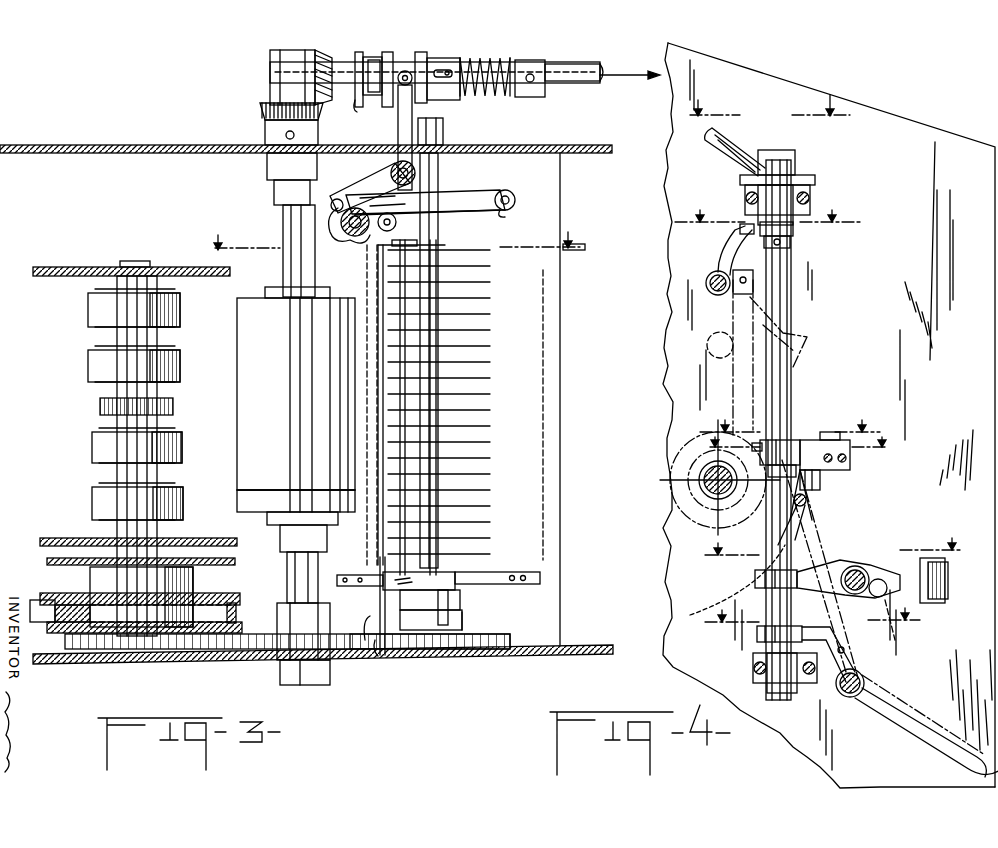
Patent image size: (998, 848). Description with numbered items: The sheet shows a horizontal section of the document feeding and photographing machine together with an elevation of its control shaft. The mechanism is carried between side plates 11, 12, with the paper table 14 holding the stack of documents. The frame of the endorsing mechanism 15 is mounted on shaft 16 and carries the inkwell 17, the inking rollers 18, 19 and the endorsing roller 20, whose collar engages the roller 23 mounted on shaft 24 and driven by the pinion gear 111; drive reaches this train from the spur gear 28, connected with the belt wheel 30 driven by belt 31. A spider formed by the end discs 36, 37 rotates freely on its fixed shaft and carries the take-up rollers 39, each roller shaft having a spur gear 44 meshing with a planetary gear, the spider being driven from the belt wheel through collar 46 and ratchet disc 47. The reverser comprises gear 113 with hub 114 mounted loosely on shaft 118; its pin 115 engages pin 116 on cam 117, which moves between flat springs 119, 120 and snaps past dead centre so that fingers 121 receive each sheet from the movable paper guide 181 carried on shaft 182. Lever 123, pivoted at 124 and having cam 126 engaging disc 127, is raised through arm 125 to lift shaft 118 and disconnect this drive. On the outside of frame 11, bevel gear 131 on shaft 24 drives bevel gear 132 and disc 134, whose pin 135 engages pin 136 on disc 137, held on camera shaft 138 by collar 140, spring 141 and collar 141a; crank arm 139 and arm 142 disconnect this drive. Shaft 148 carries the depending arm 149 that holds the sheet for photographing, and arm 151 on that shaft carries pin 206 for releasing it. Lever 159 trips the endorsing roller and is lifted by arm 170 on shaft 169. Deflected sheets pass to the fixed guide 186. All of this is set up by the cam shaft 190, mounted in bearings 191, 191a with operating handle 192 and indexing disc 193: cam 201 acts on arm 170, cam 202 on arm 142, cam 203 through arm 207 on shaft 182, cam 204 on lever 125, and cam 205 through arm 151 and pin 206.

In FIG. 3, the side plate 11 is at (58, 145).
In FIG. 3, the side plate 12 is at (578, 655).
In FIG. 3, the paper table 14 is at (396, 234).
In FIG. 4, the frame of the endorsing mechanism 15 is at (771, 112).
In FIG. 4, the shaft 16 is at (768, 219).
In FIG. 4, the inkwell 17 is at (794, 425).
In FIG. 4, the inking roller 18 is at (800, 446).
In FIG. 4, the inking roller 19 is at (835, 548).
In FIG. 4, the endorsing roller 20 is at (823, 623).
In FIG. 3, the roller 23 is at (237, 322).
In FIG. 3, the shaft 24 is at (283, 265).
In FIG. 4, the shaft 24 is at (718, 496).
In FIG. 3, the spur gear 28 is at (65, 644).
In FIG. 3, the belt wheel 30 is at (80, 593).
In FIG. 3, the belt 31 is at (236, 609).
In FIG. 3, the disc 36 is at (75, 267).
In FIG. 3, the disc 37 is at (75, 538).
In FIG. 3, the take-up rollers 39 is at (88, 367).
In FIG. 3, the spur gear 44 is at (100, 408).
In FIG. 3, the collar 46 is at (185, 578).
In FIG. 3, the ratchet disc 47 is at (233, 565).
In FIG. 3, the pinion gear 111 is at (362, 640).
In FIG. 3, the gear 113 is at (510, 638).
In FIG. 3, the hub 114 is at (462, 625).
In FIG. 3, the pin 115 is at (408, 620).
In FIG. 3, the pin 116 is at (415, 598).
In FIG. 3, the cam 117 is at (395, 593).
In FIG. 3, the shaft 118 is at (400, 231).
In FIG. 4, the shaft 118 is at (856, 566).
In FIG. 3, the flat spring 119 is at (364, 572).
In FIG. 3, the flat spring 120 is at (505, 584).
In FIG. 3, the fingers 121 is at (490, 282).
In FIG. 3, the lever 123 is at (505, 207).
In FIG. 4, the lever 123 is at (898, 572).
In FIG. 3, the pivot 124 is at (514, 196).
In FIG. 4, the pivot 124 is at (945, 588).
In FIG. 4, the arm 125 is at (820, 588).
In FIG. 3, the cam 126 is at (440, 212).
In FIG. 3, the disc 127 is at (448, 190).
In FIG. 3, the bevel gear 131 is at (255, 112).
In FIG. 3, the bevel gear 132 is at (305, 50).
In FIG. 3, the disc 134 is at (362, 104).
In FIG. 3, the pin 135 is at (364, 52).
In FIG. 3, the pin 136 is at (375, 60).
In FIG. 3, the disc 137 is at (386, 107).
In FIG. 3, the shaft 138 is at (555, 90).
In FIG. 3, the crank arm 139 is at (438, 120).
In FIG. 3, the collar 140 is at (448, 58).
In FIG. 3, the spring 141 is at (507, 58).
In FIG. 3, the collar 141a is at (525, 60).
In FIG. 3, the arm 142 is at (365, 190).
In FIG. 4, the arm 142 is at (815, 438).
In FIG. 4, the shaft 148 is at (864, 681).
In FIG. 4, the depending arm 149 is at (930, 742).
In FIG. 4, the arm 151 is at (835, 675).
In FIG. 4, the lever 159 is at (742, 345).
In FIG. 4, the shaft 169 is at (716, 295).
In FIG. 4, the arm 170 is at (732, 250).
In FIG. 3, the movable paper guide 181 is at (367, 541).
In FIG. 4, the movable paper guide 181 is at (808, 508).
In FIG. 3, the shaft 182 is at (372, 660).
In FIG. 4, the shaft 182 is at (806, 500).
In FIG. 4, the fixed guide 186 is at (718, 604).
In FIG. 3, the cam shaft 190 is at (352, 238).
In FIG. 4, the cam shaft 190 is at (790, 258).
In FIG. 4, the bearing 191 is at (760, 196).
In FIG. 4, the bearing 191a is at (760, 672).
In FIG. 4, the operating handle 192 is at (730, 145).
In FIG. 4, the indexing disc 193 is at (815, 183).
In FIG. 4, the cam 201 is at (795, 238).
In FIG. 4, the cam 202 is at (785, 442).
In FIG. 4, the cam 203 is at (775, 470).
In FIG. 4, the cam 204 is at (760, 590).
In FIG. 4, the cam 205 is at (760, 645).
In FIG. 4, the pin 206 is at (848, 650).
In FIG. 4, the arm 207 is at (820, 490).